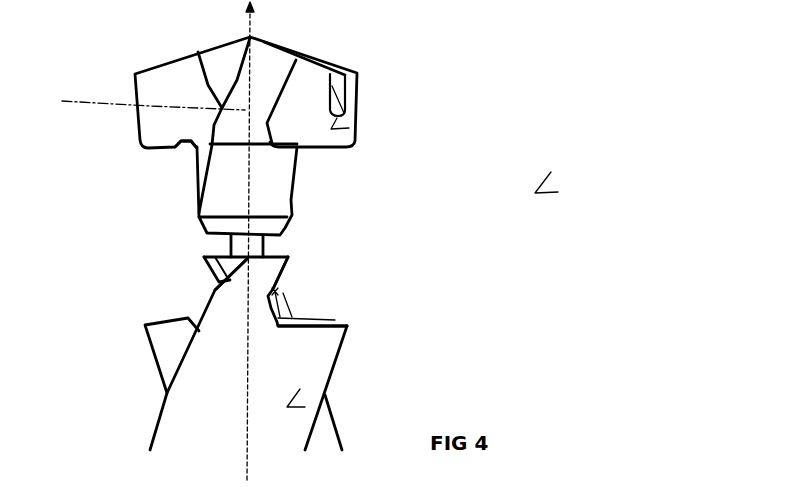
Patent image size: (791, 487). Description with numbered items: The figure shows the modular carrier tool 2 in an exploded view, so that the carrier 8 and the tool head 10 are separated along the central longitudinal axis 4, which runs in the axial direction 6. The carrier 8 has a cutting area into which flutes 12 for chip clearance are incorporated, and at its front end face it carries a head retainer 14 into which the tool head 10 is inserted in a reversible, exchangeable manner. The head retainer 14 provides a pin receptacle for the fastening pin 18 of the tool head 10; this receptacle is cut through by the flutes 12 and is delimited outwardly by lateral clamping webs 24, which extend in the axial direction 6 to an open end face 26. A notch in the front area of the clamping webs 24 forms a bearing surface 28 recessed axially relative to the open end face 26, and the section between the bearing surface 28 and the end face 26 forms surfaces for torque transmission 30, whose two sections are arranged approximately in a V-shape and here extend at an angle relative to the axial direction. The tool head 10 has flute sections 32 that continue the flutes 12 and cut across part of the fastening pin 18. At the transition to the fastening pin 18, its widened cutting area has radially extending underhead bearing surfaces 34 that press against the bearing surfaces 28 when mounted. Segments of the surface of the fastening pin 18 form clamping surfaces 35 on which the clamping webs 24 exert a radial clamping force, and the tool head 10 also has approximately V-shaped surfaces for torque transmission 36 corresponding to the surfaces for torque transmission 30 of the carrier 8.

The modular carrier tool 2 is at (556, 183).
The central longitudinal axis 4 is at (251, 14).
The axial direction 6 is at (250, 7).
The carrier 8 is at (303, 396).
The tool head 10 is at (345, 121).
The flutes 12 is at (323, 435).
The head retainer 14 is at (276, 291).
The fastening pin 18 is at (218, 182).
The clamping webs 24 is at (240, 285).
The open end face 26 is at (277, 253).
The bearing surface 28 is at (310, 318).
The surfaces for torque transmission 30 is at (277, 283).
The flute sections 32 is at (136, 104).
The underhead bearing surfaces 34 is at (178, 150).
The clamping surfaces 35 is at (237, 193).
The surfaces for torque transmission 36 is at (274, 100).